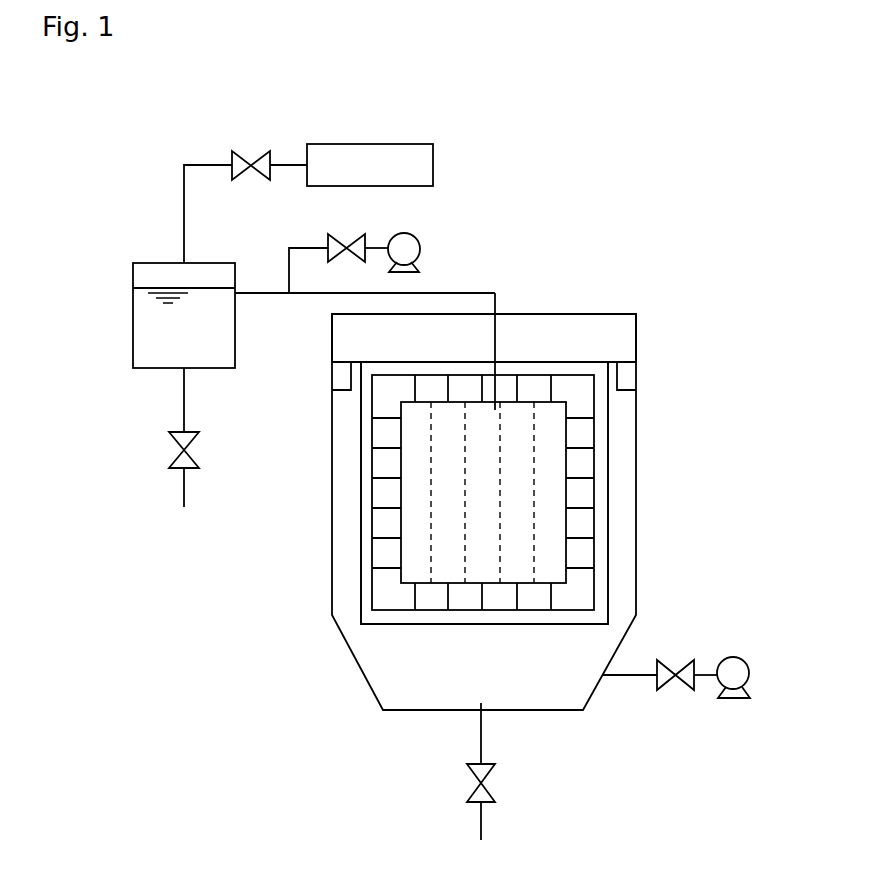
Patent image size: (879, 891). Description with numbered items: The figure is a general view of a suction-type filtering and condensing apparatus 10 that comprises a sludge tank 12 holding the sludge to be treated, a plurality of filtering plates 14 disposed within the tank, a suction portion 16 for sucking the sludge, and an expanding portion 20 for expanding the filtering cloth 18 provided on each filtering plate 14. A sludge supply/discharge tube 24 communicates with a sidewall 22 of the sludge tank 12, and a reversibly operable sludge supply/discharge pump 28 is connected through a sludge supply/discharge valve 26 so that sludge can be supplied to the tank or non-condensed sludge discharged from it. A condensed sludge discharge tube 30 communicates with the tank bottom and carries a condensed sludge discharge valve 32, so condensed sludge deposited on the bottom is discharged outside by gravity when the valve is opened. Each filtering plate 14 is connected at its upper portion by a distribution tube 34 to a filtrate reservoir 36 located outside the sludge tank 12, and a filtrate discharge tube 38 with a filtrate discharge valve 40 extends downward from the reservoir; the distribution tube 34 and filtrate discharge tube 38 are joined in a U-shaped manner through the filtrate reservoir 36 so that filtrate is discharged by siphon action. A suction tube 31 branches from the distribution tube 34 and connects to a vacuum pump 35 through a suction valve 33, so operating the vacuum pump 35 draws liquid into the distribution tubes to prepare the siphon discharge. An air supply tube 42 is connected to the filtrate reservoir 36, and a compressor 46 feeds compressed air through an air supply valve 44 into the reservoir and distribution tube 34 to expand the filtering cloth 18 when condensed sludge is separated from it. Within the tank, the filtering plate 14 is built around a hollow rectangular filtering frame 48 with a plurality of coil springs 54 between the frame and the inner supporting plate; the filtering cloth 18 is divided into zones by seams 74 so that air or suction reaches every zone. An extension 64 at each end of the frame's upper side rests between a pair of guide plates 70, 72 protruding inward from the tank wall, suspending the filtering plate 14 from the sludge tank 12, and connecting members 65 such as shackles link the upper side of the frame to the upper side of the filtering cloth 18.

The filtering and condensing apparatus 10 is at (497, 513).
The sludge tank 12 is at (504, 511).
The filtering plate 14 is at (568, 389).
The suction portion 16 is at (288, 350).
The filtering cloth 18 is at (421, 577).
The expanding portion 20 is at (282, 167).
The sidewall 22 is at (636, 540).
The sludge supply/discharge tube 24 is at (631, 676).
The sludge supply/discharge valve 26 is at (672, 660).
The sludge supply/discharge pump 28 is at (750, 671).
The condensed sludge discharge tube 30 is at (481, 741).
The suction tube 31 is at (289, 256).
The condensed sludge discharge valve 32 is at (495, 792).
The suction valve 33 is at (338, 236).
The distribution tube 34 is at (274, 293).
The vacuum pump 35 is at (416, 238).
The filtrate reservoir 36 is at (143, 333).
The filtrate discharge tube 38 is at (184, 407).
The filtrate discharge valve 40 is at (199, 441).
The air supply tube 42 is at (184, 224).
The air supply valve 44 is at (258, 176).
The compressor 46 is at (375, 144).
The filtering frame 48 is at (443, 367).
The coil spring 54 is at (485, 564).
The extension 64 is at (613, 360).
The connecting member 65 is at (518, 390).
The guide plate 70 is at (532, 375).
The guide plate 72 is at (630, 377).
The seam 74 is at (467, 527).